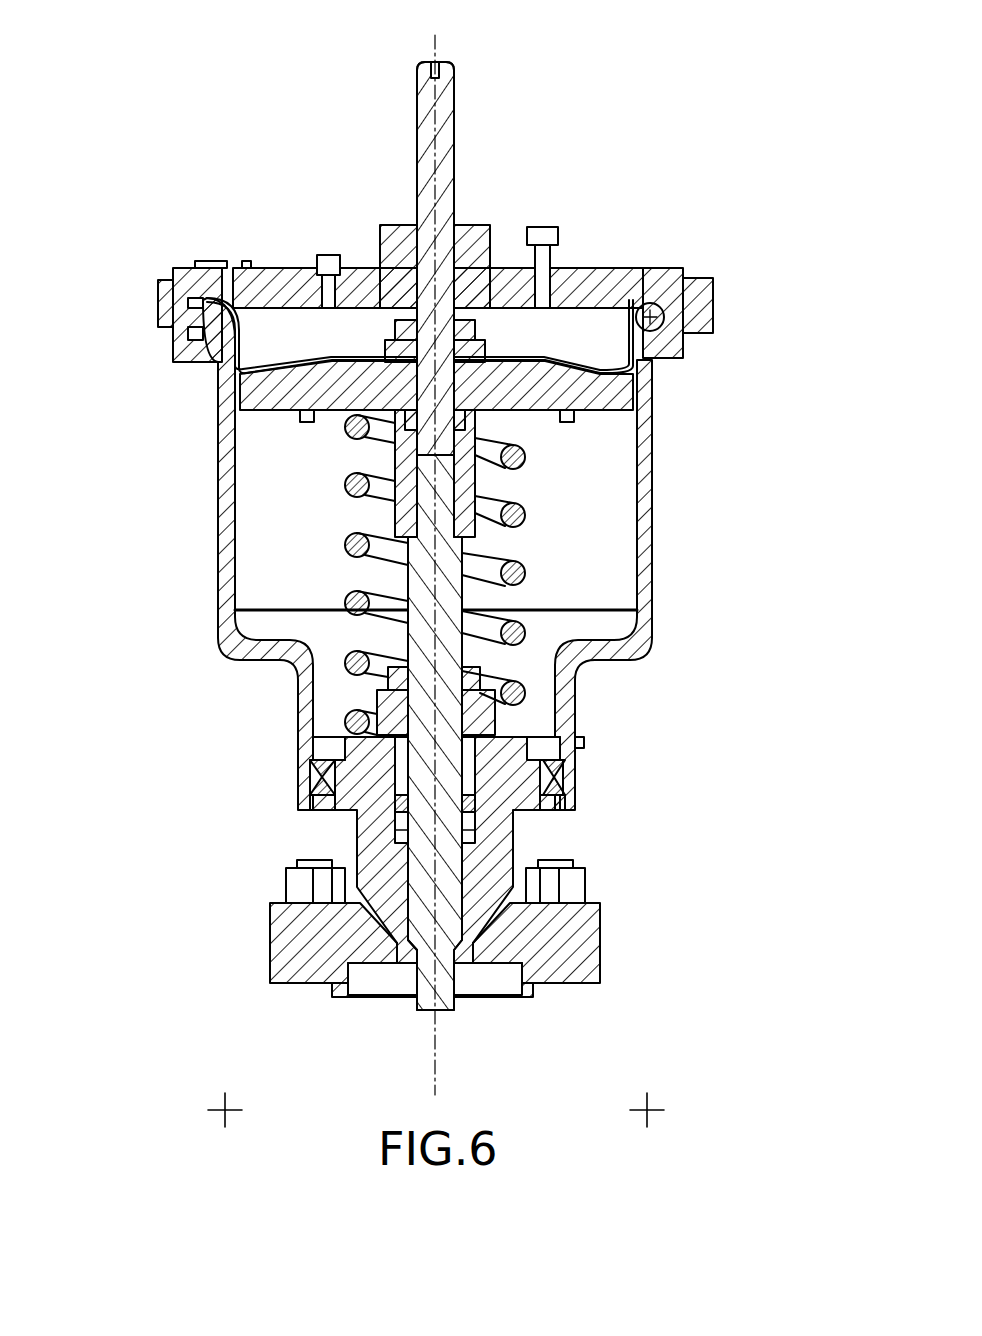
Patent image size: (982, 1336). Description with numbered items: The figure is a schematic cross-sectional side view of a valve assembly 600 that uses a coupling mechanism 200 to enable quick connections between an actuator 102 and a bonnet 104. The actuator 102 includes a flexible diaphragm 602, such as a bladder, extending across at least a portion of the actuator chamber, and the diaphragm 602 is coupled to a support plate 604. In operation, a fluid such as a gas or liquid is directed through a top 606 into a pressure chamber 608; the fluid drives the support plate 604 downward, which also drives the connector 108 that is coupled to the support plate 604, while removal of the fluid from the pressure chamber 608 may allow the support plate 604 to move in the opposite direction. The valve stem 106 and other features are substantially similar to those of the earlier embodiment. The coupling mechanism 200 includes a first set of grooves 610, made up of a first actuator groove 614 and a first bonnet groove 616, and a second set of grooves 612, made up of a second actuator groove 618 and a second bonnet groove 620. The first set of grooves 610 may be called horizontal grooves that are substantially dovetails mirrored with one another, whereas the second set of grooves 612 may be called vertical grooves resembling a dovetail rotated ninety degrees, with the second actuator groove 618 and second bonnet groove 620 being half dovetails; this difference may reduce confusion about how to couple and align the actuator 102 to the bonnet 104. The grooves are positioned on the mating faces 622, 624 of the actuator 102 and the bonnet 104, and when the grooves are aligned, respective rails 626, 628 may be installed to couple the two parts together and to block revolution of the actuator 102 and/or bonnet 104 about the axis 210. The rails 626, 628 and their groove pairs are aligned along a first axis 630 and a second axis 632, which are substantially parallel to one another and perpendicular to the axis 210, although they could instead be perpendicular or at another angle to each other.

The valve assembly 600 is at (694, 158).
The top 606 is at (273, 280).
The pressure chamber 608 is at (558, 343).
The flexible diaphragm 602 is at (590, 395).
The support plate 604 is at (587, 395).
The actuator 102 is at (645, 478).
The connector 108 is at (465, 487).
The valve stem 106 is at (453, 588).
The second set of grooves 612 is at (585, 718).
The first actuator groove 614 is at (323, 765).
The first set of grooves 610 is at (277, 748).
The mating face 622 is at (310, 773).
The coupling mechanism 200 is at (232, 800).
The mating face 624 is at (307, 785).
The rail 626 is at (323, 810).
The first bonnet groove 616 is at (310, 790).
The second actuator groove 618 is at (562, 757).
The rail 628 is at (560, 782).
The second bonnet groove 620 is at (570, 808).
The bonnet 104 is at (588, 938).
The axis 210 is at (437, 1056).
The first axis 630 is at (220, 1117).
The second axis 632 is at (652, 1117).